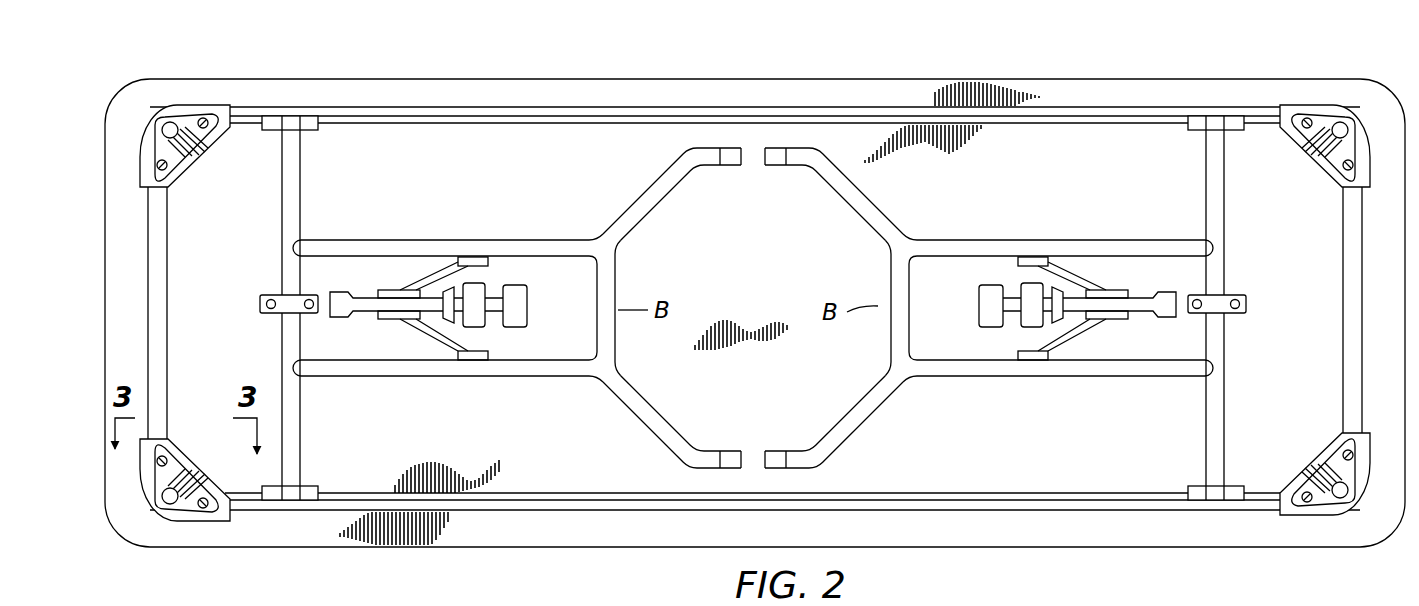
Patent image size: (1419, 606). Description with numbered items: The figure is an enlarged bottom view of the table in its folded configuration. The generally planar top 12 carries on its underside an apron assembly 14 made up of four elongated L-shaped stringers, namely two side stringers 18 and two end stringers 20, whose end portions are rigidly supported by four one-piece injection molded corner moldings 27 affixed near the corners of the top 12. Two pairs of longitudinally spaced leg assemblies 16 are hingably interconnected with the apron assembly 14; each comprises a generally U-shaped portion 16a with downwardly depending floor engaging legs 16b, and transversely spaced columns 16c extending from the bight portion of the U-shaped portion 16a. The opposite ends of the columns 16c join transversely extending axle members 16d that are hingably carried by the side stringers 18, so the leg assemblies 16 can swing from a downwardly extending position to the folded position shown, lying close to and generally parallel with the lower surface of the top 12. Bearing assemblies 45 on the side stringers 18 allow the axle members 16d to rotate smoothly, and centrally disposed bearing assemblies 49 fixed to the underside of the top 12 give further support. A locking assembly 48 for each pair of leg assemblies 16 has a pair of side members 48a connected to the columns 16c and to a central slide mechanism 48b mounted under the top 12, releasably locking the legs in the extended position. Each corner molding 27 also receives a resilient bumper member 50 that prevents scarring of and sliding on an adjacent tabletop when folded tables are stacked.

The top 12 is at (1080, 69).
The apron assembly 14 is at (943, 78).
The leg assemblies 16 is at (487, 382).
The U-shaped portion 16a is at (611, 199).
The floor engaging legs 16b is at (735, 167).
The columns 16c is at (495, 243).
The axle members 16d is at (300, 413).
The side stringers 18 is at (869, 103).
The end stringers 20 is at (169, 262).
The corner moldings 27 is at (160, 102).
The bearing assemblies 45 is at (310, 131).
The locking assembly 48 is at (983, 303).
The side members 48a is at (425, 264).
The central slide mechanism 48b is at (362, 296).
The bearing assemblies 49 is at (259, 306).
The bumper members 50 is at (179, 117).